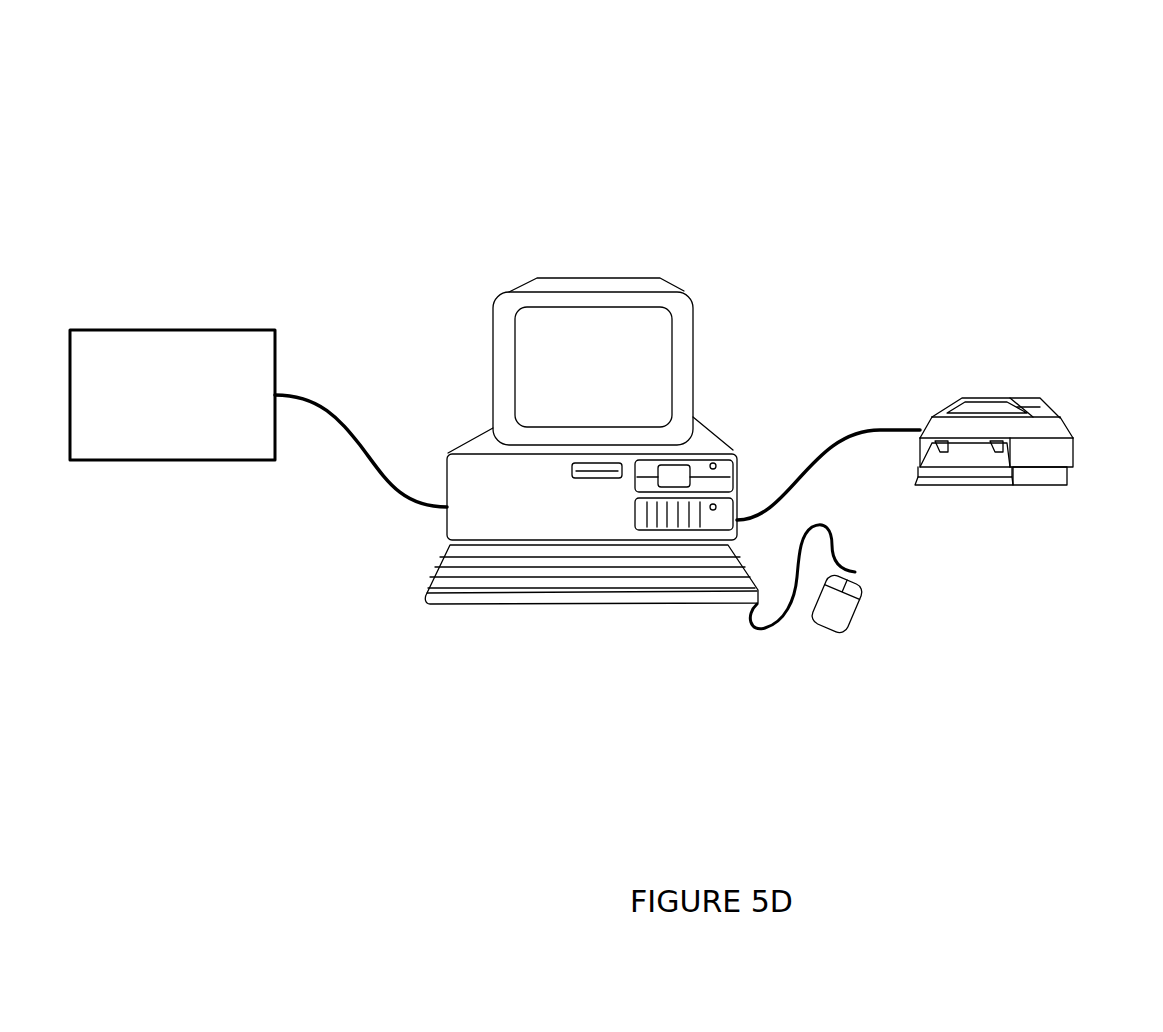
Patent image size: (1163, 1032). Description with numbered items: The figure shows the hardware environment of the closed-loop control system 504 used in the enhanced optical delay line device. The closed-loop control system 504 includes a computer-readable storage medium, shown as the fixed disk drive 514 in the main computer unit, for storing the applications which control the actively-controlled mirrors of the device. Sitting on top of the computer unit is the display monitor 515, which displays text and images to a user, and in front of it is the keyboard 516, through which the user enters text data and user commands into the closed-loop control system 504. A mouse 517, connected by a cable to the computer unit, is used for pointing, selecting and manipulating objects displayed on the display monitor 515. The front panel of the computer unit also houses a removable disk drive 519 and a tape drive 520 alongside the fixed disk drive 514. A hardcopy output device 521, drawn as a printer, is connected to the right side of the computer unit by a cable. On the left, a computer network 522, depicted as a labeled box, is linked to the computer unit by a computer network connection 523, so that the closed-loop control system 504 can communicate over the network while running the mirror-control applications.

The closed-loop control system 504 is at (704, 122).
The fixed disk drive 514 is at (665, 526).
The display monitor 515 is at (503, 333).
The keyboard 516 is at (482, 598).
The mouse 517 is at (848, 632).
The removable disk drive 519 is at (740, 494).
The tape drive 520 is at (705, 431).
The hardcopy output device 521 is at (1073, 453).
The computer network 522 is at (227, 329).
The computer network connection 523 is at (357, 425).